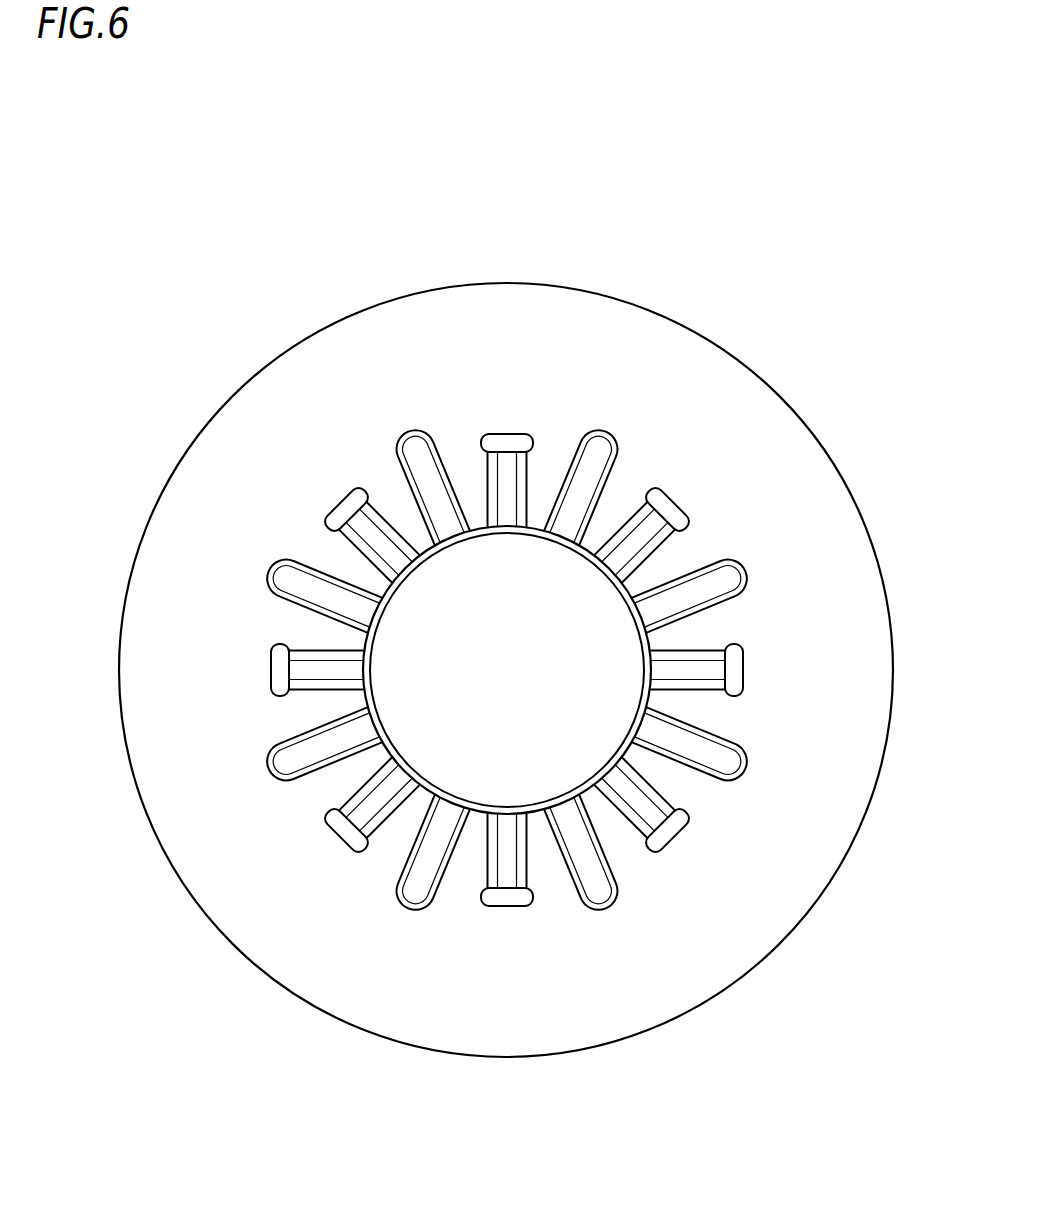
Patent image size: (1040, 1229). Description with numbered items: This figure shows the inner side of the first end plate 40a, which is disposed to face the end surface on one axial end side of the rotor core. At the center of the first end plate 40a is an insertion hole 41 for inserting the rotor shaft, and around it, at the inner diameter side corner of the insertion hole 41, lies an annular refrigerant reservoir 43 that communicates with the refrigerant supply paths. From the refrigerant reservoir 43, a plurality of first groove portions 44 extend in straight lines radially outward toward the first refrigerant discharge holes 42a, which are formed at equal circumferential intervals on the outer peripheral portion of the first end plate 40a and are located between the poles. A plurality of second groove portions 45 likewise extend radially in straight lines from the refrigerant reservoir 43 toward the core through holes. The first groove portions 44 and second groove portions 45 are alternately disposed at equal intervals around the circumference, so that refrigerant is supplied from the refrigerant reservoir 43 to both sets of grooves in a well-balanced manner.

The first end plate 40a is at (275, 348).
The insertion hole 41 is at (585, 566).
The first refrigerant discharge holes 42a is at (333, 506).
The refrigerant reservoir 43 is at (605, 782).
The first groove portions 44 is at (380, 522).
The second groove portions 45 is at (413, 428).